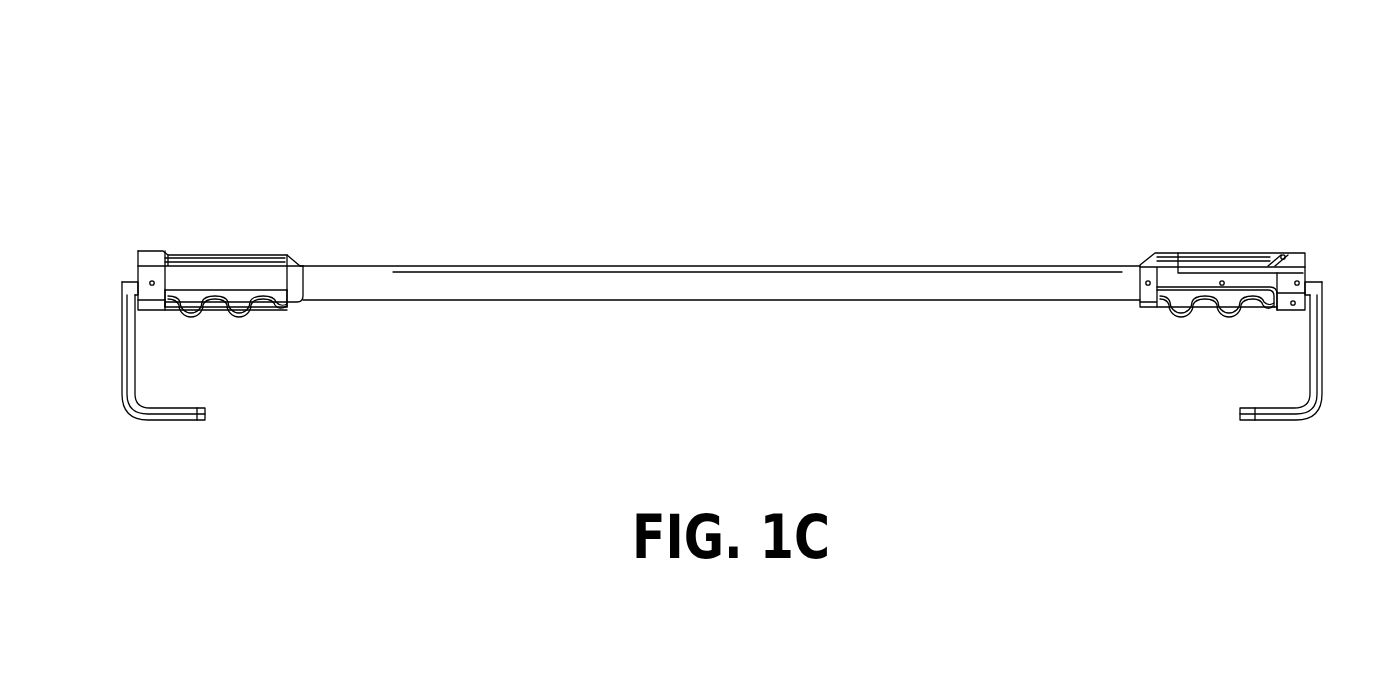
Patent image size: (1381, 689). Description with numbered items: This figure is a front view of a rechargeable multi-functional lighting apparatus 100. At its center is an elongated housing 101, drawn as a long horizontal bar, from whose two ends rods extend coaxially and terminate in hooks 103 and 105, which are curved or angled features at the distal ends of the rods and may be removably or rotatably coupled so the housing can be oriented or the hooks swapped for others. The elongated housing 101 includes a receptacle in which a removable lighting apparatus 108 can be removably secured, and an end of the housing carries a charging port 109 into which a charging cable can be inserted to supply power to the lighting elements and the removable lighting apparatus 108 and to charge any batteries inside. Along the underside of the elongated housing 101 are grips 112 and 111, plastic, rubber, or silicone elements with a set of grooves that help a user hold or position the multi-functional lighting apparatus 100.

The multi-functional lighting apparatus 100 is at (258, 77).
The elongated housing 101 is at (728, 265).
The hook 103 is at (1322, 373).
The hook 105 is at (122, 330).
The removable lighting apparatus 108 is at (1207, 255).
The charging port 109 is at (1308, 264).
The grip 111 is at (1190, 304).
The grip 112 is at (198, 300).